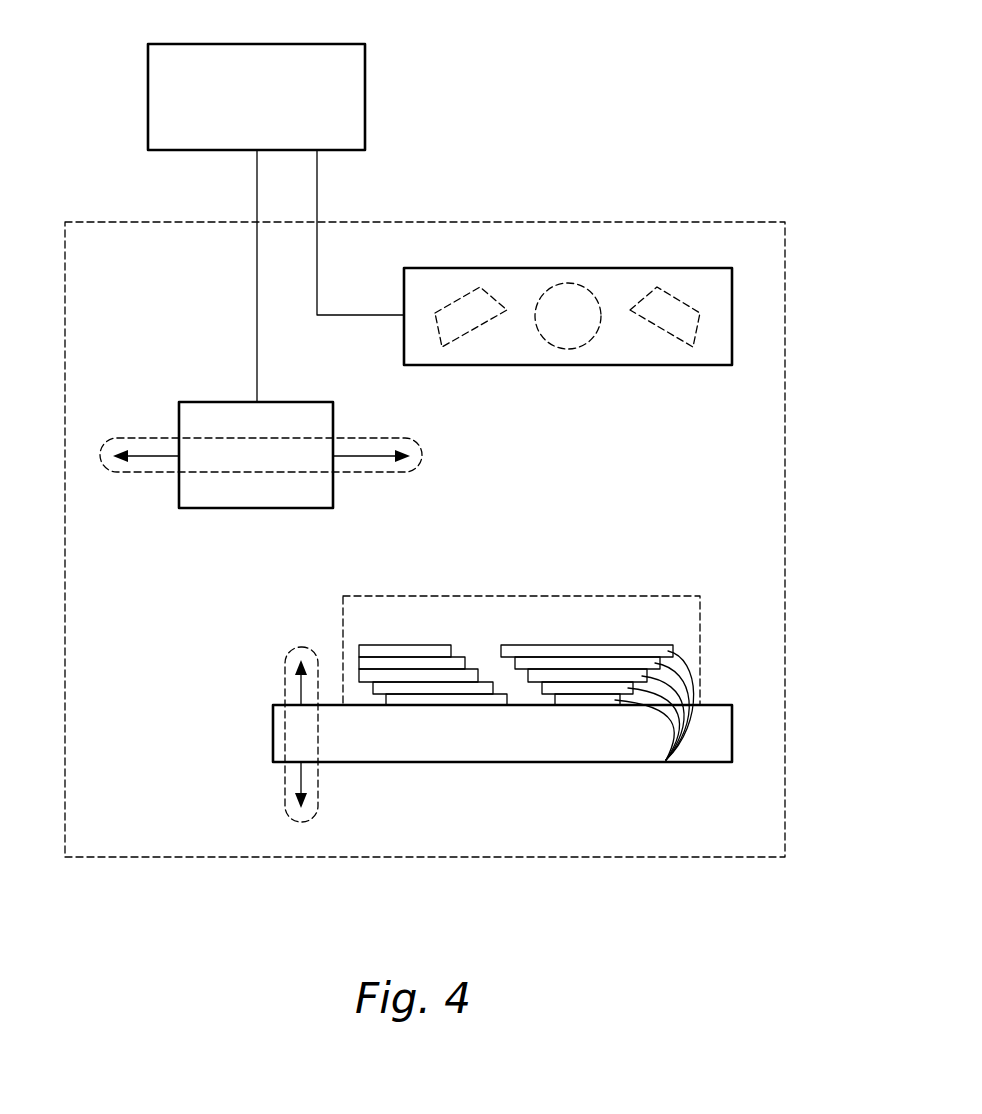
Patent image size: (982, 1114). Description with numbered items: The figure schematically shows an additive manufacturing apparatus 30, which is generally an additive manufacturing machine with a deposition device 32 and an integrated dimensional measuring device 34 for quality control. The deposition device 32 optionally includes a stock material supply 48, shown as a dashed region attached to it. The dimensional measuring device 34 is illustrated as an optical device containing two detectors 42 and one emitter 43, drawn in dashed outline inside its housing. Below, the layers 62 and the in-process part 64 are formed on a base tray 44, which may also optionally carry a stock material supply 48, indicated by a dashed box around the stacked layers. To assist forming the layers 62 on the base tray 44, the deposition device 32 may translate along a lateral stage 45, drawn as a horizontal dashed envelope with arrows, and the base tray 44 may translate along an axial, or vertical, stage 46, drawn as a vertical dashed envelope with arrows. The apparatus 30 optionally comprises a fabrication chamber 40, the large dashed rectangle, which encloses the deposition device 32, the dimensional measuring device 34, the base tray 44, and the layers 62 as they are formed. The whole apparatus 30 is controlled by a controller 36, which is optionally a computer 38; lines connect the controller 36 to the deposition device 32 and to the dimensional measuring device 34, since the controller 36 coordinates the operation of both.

The apparatus 30 is at (647, 84).
The deposition device 32 is at (257, 508).
The dimensional measuring device 34 is at (732, 330).
The controller 36 is at (148, 68).
The computer 38 is at (148, 120).
The fabrication chamber 40 is at (515, 858).
The detectors 42 is at (448, 305).
The emitter 43 is at (587, 288).
The base tray 44 is at (273, 733).
The lateral stage 45 is at (148, 472).
The axial or vertical stage 46 is at (292, 822).
The stock material supply 48 is at (187, 415).
The layers 62 is at (666, 760).
The in-process part 64 is at (573, 643).